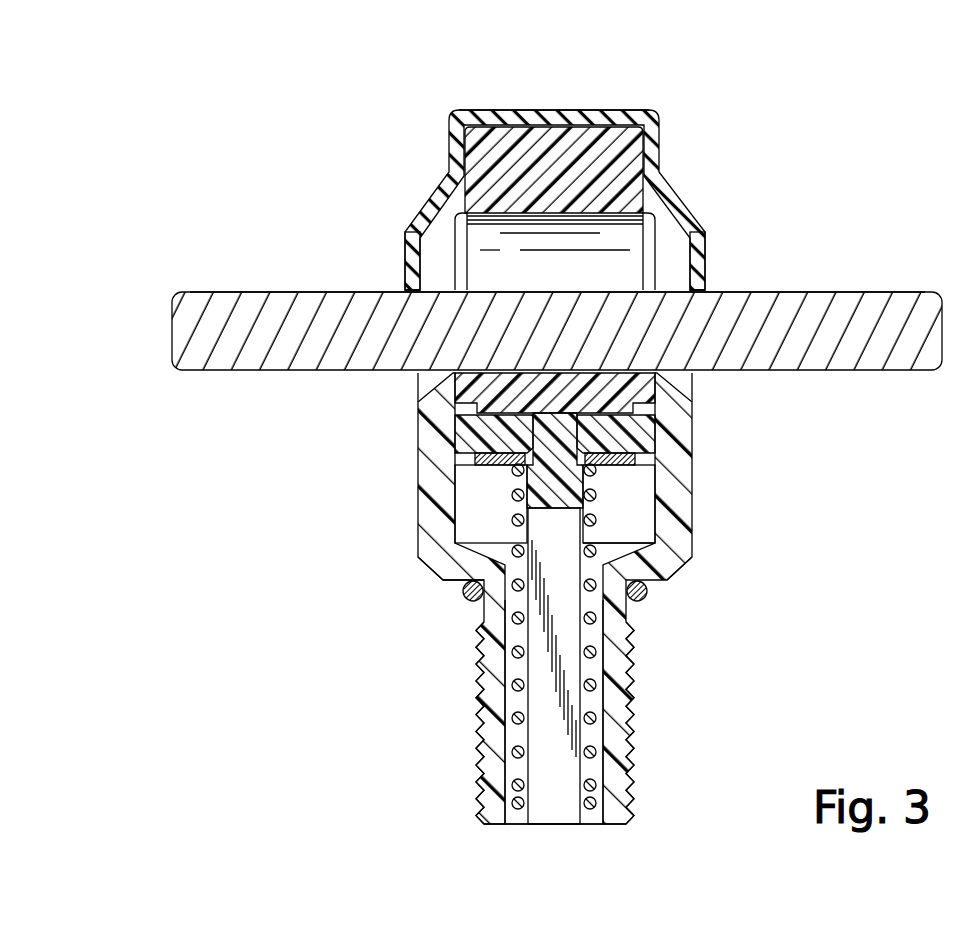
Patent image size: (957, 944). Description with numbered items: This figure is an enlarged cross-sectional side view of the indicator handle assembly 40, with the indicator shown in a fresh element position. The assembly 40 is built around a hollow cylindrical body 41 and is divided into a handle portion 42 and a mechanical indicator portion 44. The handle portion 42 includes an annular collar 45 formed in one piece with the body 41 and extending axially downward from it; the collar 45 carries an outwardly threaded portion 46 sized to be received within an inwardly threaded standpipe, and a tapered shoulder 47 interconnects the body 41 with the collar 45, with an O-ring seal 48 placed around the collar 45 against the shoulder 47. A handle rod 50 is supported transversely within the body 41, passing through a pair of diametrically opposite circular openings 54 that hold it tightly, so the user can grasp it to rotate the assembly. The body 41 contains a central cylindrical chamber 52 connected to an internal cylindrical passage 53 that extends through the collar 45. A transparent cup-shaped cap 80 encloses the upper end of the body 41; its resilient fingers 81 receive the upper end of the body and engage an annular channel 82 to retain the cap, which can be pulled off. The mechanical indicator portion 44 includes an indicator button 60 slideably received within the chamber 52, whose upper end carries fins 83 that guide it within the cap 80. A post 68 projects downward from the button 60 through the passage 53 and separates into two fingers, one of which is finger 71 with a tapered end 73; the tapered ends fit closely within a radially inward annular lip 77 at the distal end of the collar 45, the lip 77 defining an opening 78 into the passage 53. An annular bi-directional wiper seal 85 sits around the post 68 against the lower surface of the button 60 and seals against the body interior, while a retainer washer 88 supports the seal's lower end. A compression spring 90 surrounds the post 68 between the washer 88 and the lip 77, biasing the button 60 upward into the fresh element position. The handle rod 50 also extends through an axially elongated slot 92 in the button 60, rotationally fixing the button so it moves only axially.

The indicator handle assembly 40 is at (563, 172).
The cylindrical body 41 is at (680, 460).
The handle portion 42 is at (579, 623).
The mechanical indicator portion 44 is at (447, 210).
The annular collar 45 is at (612, 707).
The outwardly threaded portion 46 is at (625, 767).
The tapered shoulder 47 is at (420, 577).
The O-ring seal 48 is at (470, 603).
The handle rod 50 is at (187, 372).
The central cylindrical chamber 52 is at (635, 523).
The internal cylindrical passage 53 is at (590, 635).
The circular openings 54 is at (392, 294).
The indicator button 60 is at (625, 228).
The post 68 is at (537, 519).
The finger 71 is at (550, 725).
The tapered end 73 is at (552, 808).
The annular lip 77 is at (523, 827).
The opening 78 is at (583, 827).
The cap 80 is at (647, 130).
The resilient fingers 81 is at (408, 252).
The annular channel 82 is at (717, 320).
The fins 83 is at (482, 162).
The wiper seal 85 is at (633, 435).
The retainer washer 88 is at (620, 490).
The compression spring 90 is at (673, 577).
The slot 92 is at (495, 372).